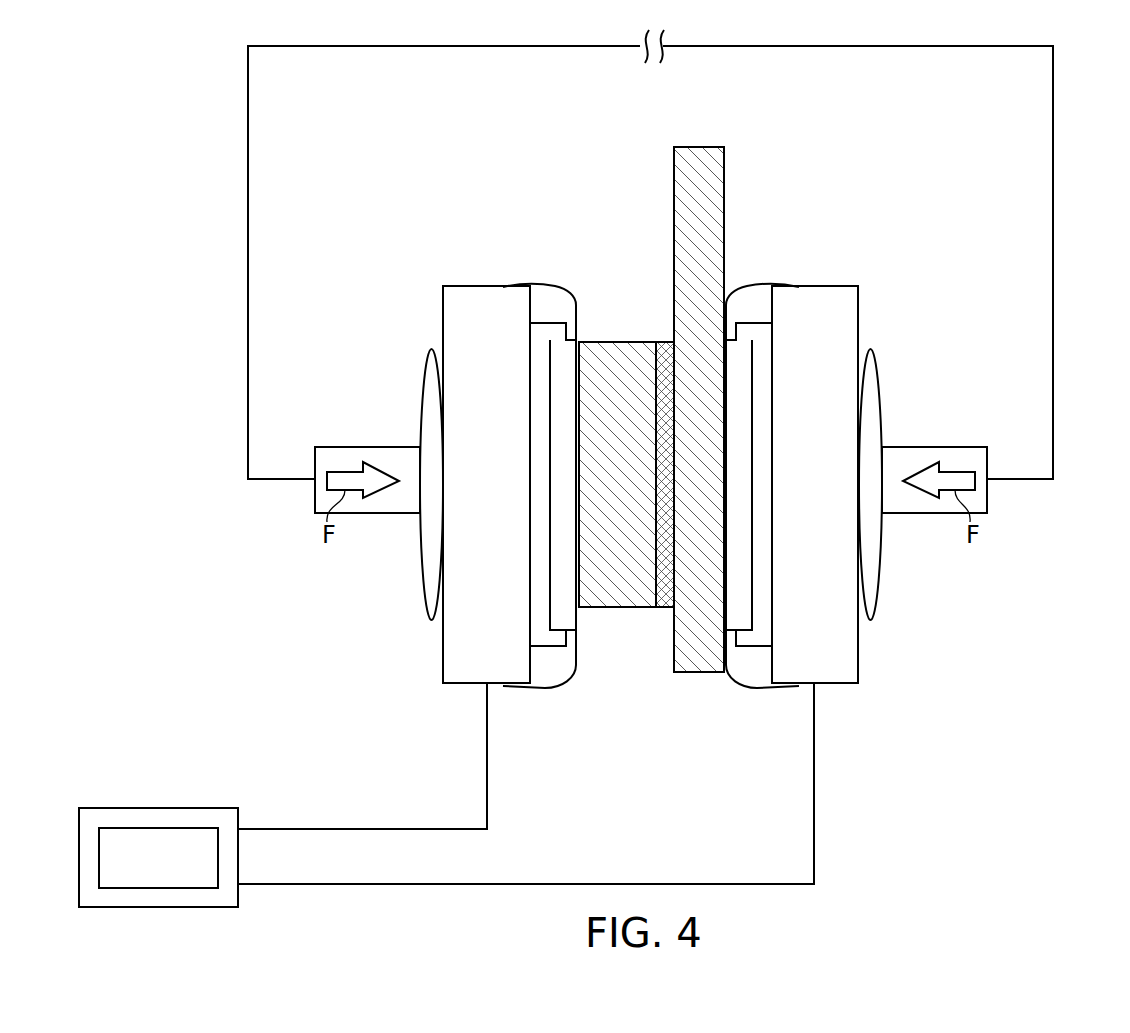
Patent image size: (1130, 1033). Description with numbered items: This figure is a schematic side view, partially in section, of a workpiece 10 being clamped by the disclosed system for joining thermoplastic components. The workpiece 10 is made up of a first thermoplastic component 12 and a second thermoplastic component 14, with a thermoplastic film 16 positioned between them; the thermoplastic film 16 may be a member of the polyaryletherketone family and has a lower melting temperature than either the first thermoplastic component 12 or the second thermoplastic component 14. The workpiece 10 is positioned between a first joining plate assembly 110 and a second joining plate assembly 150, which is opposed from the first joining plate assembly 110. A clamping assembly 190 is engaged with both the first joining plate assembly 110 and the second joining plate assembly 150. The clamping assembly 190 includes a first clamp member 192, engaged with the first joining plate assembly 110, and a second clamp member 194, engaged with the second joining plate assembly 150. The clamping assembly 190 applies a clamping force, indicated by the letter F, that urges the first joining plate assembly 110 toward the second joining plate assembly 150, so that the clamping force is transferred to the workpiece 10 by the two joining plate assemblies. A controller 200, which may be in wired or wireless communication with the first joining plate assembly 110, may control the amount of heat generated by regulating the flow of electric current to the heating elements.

The workpiece 10 is at (702, 370).
The first thermoplastic component 12 is at (617, 342).
The second thermoplastic component 14 is at (698, 147).
The thermoplastic film 16 is at (665, 342).
The first joining plate assembly 110 is at (448, 254).
The second joining plate assembly 150 is at (825, 255).
The clamping assembly 190 is at (1053, 120).
The first clamp member 192 is at (423, 575).
The second clamp member 194 is at (879, 575).
The controller 200 is at (158, 808).